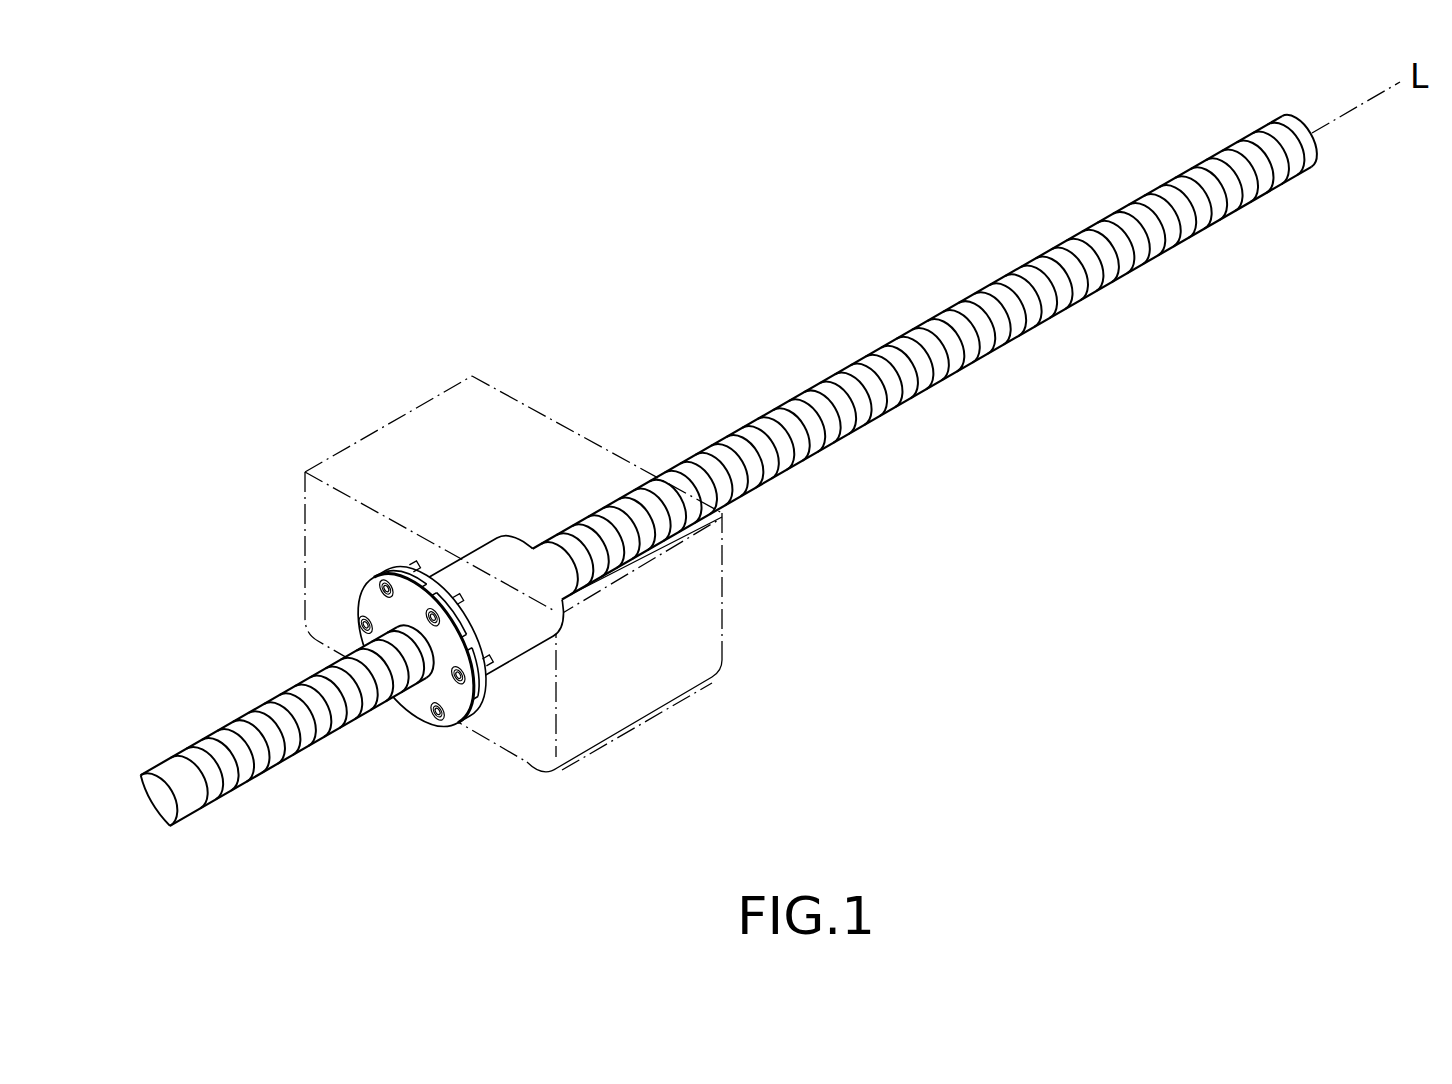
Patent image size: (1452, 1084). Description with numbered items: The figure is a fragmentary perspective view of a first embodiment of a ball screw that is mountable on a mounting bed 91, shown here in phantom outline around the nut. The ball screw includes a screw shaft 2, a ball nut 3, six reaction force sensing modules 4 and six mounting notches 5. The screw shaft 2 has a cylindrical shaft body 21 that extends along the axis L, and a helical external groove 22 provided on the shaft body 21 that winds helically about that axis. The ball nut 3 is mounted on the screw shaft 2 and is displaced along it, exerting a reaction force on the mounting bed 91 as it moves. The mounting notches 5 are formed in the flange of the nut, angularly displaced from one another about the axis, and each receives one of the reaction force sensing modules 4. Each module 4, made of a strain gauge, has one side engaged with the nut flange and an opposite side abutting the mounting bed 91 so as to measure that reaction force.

The screw shaft 2 is at (768, 532).
The shaft body 21 is at (906, 388).
The helical external groove 22 is at (955, 368).
The ball nut 3 is at (454, 724).
The reaction force sensing module 4 is at (430, 562).
The mounting notch 5 is at (416, 590).
The mounting bed 91 is at (667, 707).